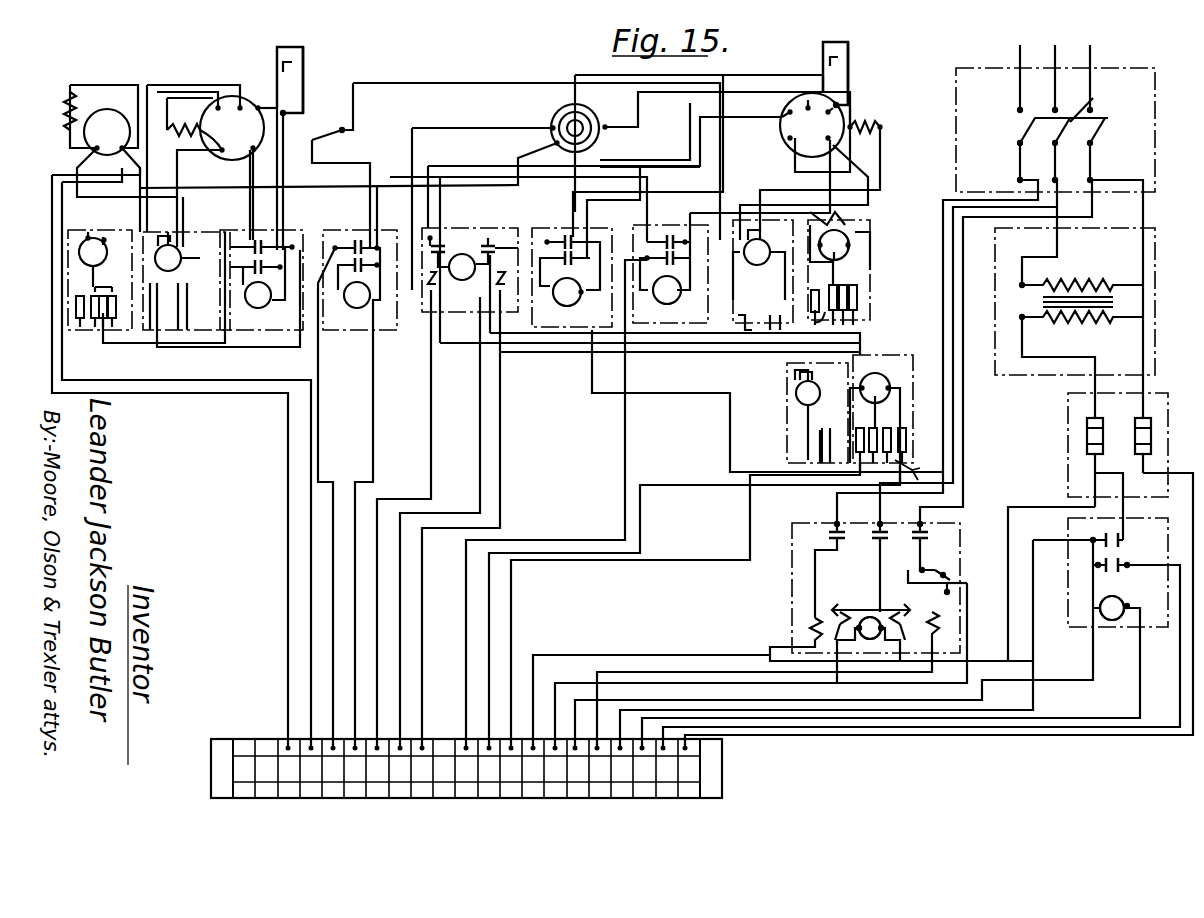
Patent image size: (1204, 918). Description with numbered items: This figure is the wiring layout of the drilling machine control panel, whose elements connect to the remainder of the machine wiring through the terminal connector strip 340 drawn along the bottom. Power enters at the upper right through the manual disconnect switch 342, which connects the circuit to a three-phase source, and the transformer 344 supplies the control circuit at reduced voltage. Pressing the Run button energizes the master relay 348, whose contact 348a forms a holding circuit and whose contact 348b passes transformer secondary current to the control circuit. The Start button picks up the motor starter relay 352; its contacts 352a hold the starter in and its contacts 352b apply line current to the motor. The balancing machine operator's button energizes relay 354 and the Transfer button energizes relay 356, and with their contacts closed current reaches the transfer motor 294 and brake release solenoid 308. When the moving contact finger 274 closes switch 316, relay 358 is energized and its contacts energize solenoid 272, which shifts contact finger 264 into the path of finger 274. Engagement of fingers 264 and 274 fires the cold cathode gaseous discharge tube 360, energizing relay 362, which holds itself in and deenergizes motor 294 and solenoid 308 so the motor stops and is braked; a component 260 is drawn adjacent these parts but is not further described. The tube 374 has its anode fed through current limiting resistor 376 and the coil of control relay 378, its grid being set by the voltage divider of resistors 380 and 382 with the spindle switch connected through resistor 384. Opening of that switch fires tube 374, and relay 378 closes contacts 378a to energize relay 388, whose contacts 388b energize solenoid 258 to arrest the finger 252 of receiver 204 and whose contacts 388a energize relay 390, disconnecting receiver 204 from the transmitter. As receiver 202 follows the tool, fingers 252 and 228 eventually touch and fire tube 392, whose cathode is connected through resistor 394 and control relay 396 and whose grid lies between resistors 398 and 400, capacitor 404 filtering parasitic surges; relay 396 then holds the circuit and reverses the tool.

The receiver 202 is at (548, 112).
The receiver 204 is at (782, 130).
The contact finger 228 is at (820, 50).
The contact finger 252 is at (852, 52).
The solenoid 258 is at (875, 120).
The relay 260 is at (248, 137).
The contact finger 264 is at (278, 70).
The solenoid 272 is at (185, 120).
The contact finger 274 is at (305, 60).
The transfer motor 294 is at (112, 112).
The brake release solenoid 308 is at (68, 118).
The switch 316 is at (340, 134).
The terminal connector strip 340 is at (222, 741).
The manual disconnect switch 342 is at (1100, 130).
The transformer 344 is at (1113, 302).
The master relay 348 is at (1114, 622).
The contact of master relay 348a is at (1121, 571).
The contact of master relay 348b is at (1125, 541).
The motor starter relay 352 is at (872, 616).
The contacts of motor starter relay 352a is at (918, 540).
The contacts of motor starter relay 352b is at (840, 540).
The relay 354 is at (357, 310).
The relay 356 is at (258, 306).
The relay 358 is at (674, 302).
The cold cathode gaseous discharge tube 360 is at (78, 256).
The relay 362 is at (180, 258).
The cold cathode gaseous discharge tube 374 is at (877, 372).
The current limiting resistor 376 is at (905, 446).
The control relay 378 is at (806, 397).
The contacts of control relay 378a is at (822, 438).
The resistor 380 is at (875, 465).
The resistor 382 is at (906, 436).
The resistor 384 is at (850, 472).
The relay 388 is at (569, 287).
The contacts of relay 388a is at (574, 256).
The contacts of relay 388b is at (568, 234).
The relay 390 is at (462, 254).
The cold cathode gaseous discharge tube 392 is at (852, 242).
The resistor 394 is at (810, 312).
The control relay 396 is at (759, 281).
The resistor 398 is at (858, 300).
The resistor 400 is at (848, 292).
The capacitor 404 is at (838, 286).